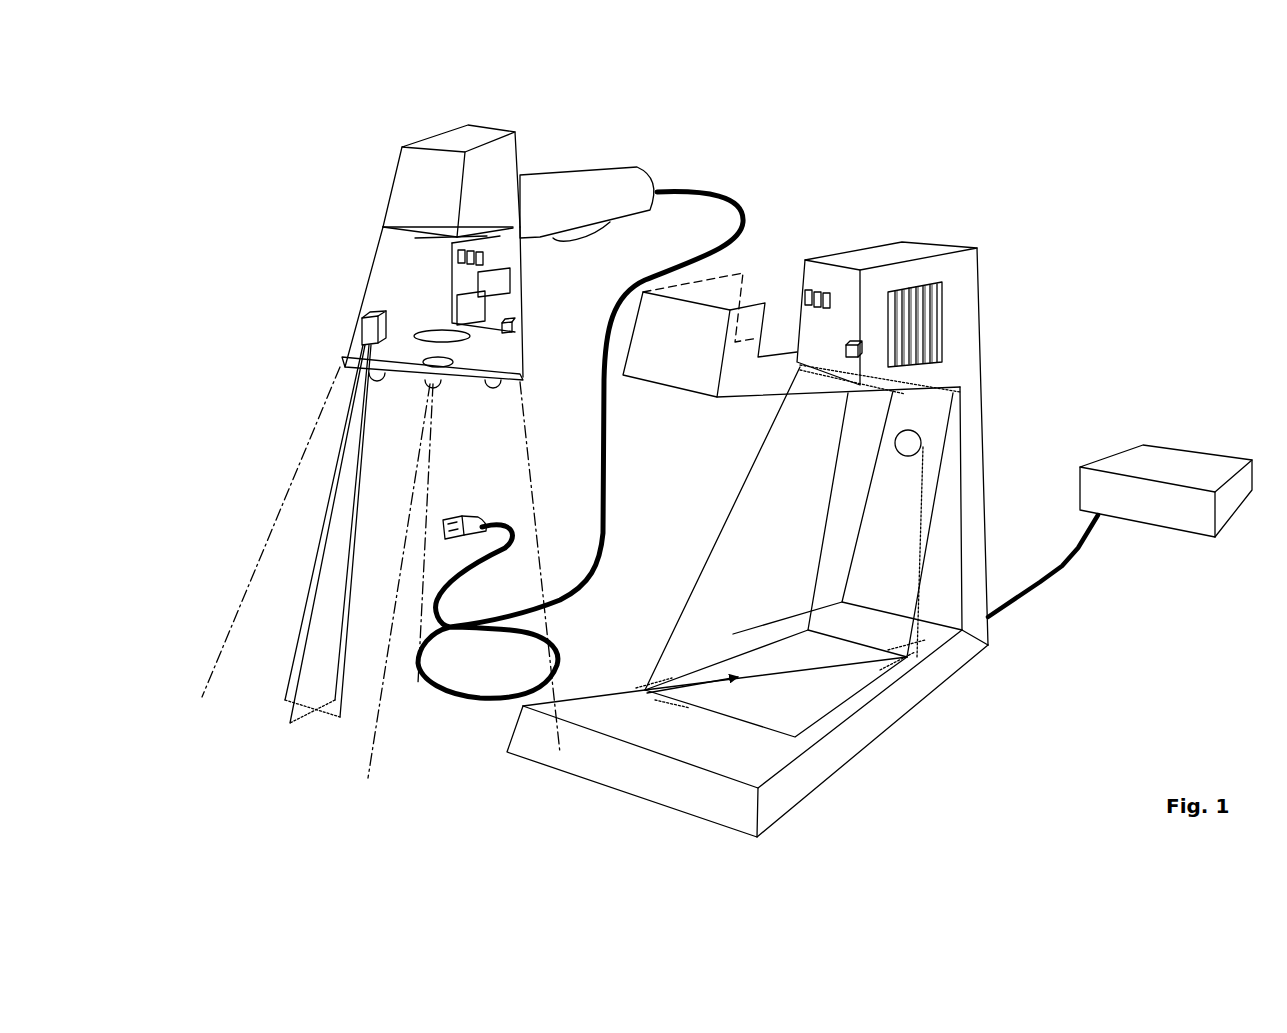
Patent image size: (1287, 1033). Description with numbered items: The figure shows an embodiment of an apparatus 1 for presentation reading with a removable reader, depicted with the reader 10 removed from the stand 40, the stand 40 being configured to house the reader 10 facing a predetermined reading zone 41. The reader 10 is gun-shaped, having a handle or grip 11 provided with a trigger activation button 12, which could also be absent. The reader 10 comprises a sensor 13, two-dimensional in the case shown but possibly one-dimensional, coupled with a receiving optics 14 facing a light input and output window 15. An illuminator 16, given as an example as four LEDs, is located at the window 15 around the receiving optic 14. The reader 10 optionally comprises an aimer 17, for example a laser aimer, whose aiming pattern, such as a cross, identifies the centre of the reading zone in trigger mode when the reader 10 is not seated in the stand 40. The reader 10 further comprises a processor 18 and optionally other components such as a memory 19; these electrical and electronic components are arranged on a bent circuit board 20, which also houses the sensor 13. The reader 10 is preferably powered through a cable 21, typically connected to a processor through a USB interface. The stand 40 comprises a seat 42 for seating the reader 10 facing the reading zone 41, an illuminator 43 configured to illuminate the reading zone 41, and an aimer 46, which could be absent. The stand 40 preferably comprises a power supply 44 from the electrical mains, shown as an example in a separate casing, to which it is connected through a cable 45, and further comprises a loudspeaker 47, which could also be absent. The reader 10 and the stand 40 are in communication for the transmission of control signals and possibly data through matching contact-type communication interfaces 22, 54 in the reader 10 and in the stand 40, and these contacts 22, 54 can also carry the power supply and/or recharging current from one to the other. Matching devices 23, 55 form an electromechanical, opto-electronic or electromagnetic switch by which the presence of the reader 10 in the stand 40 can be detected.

The apparatus for presentation reading 1 is at (1192, 178).
The reader 10 is at (718, 170).
The handle or grip 11 is at (635, 180).
The trigger activation button 12 is at (603, 227).
The sensor 13 is at (442, 241).
The receiving optics 14 is at (435, 328).
The light input and output window 15 is at (390, 396).
The illuminator 16 is at (331, 358).
The aimer 17 is at (363, 325).
The processor 18 is at (503, 283).
The memory 19 is at (487, 307).
The bent circuit board 20 is at (495, 227).
The cable 21 is at (480, 702).
The communication interface 22 is at (492, 255).
The switch device 23 is at (512, 328).
The stand 40 is at (953, 712).
The reading zone 41 is at (648, 692).
The seat 42 is at (762, 274).
The illuminator 43 is at (940, 375).
The power supply 44 is at (1173, 463).
The cable 45 is at (1040, 583).
The aimer 46 is at (913, 440).
The loudspeaker 47 is at (940, 318).
The communication interface 54 is at (814, 278).
The switch device 55 is at (852, 344).